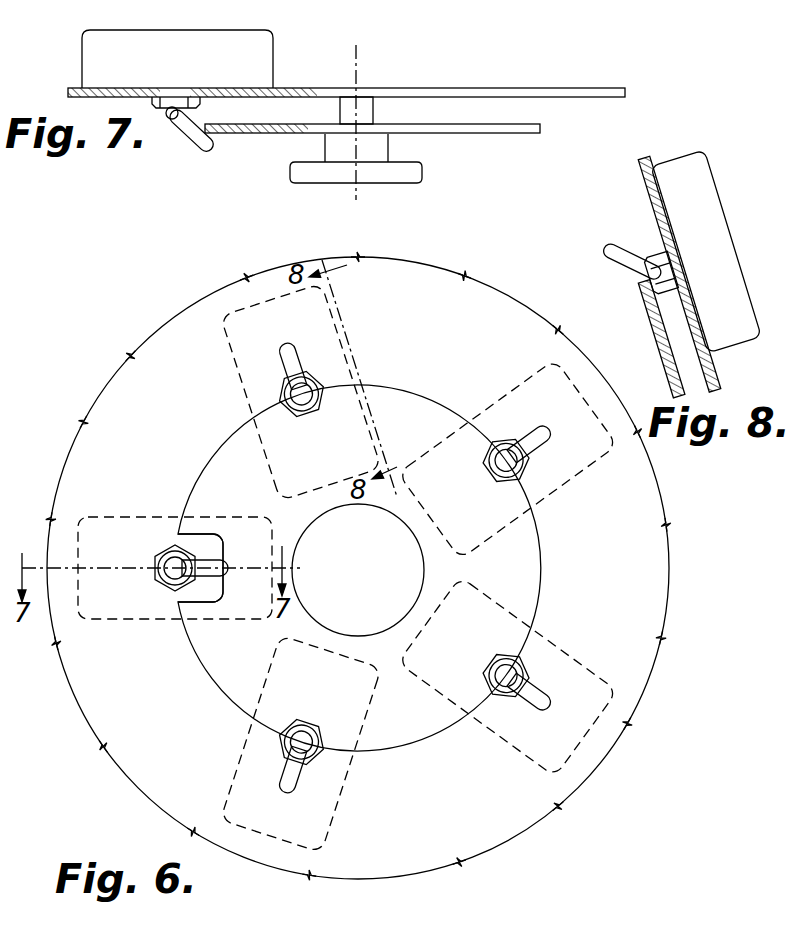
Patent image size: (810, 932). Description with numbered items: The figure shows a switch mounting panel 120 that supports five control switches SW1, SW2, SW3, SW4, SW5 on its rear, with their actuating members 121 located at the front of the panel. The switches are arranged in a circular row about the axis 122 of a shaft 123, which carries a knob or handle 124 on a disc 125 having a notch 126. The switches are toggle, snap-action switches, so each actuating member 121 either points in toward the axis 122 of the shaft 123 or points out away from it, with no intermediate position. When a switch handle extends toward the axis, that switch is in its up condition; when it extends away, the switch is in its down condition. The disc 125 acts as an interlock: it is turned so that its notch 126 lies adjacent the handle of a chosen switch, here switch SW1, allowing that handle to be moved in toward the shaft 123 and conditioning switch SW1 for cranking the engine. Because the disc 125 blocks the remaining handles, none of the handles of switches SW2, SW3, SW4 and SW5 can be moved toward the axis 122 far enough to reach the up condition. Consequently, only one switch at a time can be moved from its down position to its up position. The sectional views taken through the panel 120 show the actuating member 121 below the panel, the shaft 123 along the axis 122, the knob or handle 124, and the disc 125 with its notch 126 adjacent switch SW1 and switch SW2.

In FIG. 6, the panel 120 is at (72, 452).
In FIG. 7, the panel 120 is at (625, 93).
In FIG. 8, the panel 120 is at (641, 160).
In FIG. 6, the actuating members 121 is at (221, 566).
In FIG. 7, the actuating members 121 is at (210, 150).
In FIG. 8, the actuating members 121 is at (612, 245).
In FIG. 7, the axis 122 is at (357, 72).
In FIG. 7, the shaft 123 is at (374, 110).
In FIG. 6, the knob or handle 124 is at (305, 531).
In FIG. 7, the knob or handle 124 is at (422, 172).
In FIG. 6, the disc 125 is at (222, 452).
In FIG. 7, the disc 125 is at (540, 128).
In FIG. 8, the disc 125 is at (650, 327).
In FIG. 6, the notch 126 is at (200, 541).
In FIG. 7, the notch 126 is at (213, 127).
In FIG. 6, the switch SW1 is at (152, 508).
In FIG. 7, the switch SW1 is at (273, 54).
In FIG. 6, the switch SW2 is at (337, 331).
In FIG. 8, the switch SW2 is at (703, 185).
In FIG. 6, the switch SW3 is at (573, 475).
In FIG. 6, the switch SW4 is at (558, 652).
In FIG. 6, the switch SW5 is at (350, 778).